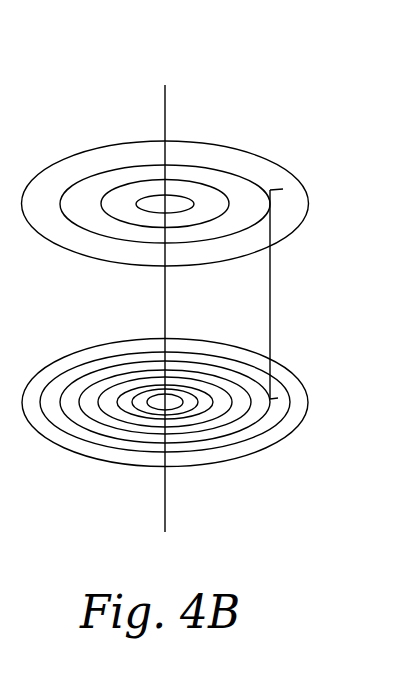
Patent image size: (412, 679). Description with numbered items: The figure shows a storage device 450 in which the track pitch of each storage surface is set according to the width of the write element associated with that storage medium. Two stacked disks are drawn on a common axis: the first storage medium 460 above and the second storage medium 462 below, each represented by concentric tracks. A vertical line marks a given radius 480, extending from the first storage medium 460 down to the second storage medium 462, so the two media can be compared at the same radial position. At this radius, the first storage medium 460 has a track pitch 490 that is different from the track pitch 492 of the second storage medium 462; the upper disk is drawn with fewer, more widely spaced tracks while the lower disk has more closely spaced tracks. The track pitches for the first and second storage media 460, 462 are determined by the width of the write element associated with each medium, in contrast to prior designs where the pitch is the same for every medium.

The storage device 450 is at (242, 79).
The first storage medium 460 is at (67, 157).
The second storage medium 462 is at (68, 353).
The given radius 480 is at (270, 292).
The track pitch 490 is at (283, 189).
The track pitch 492 is at (278, 398).